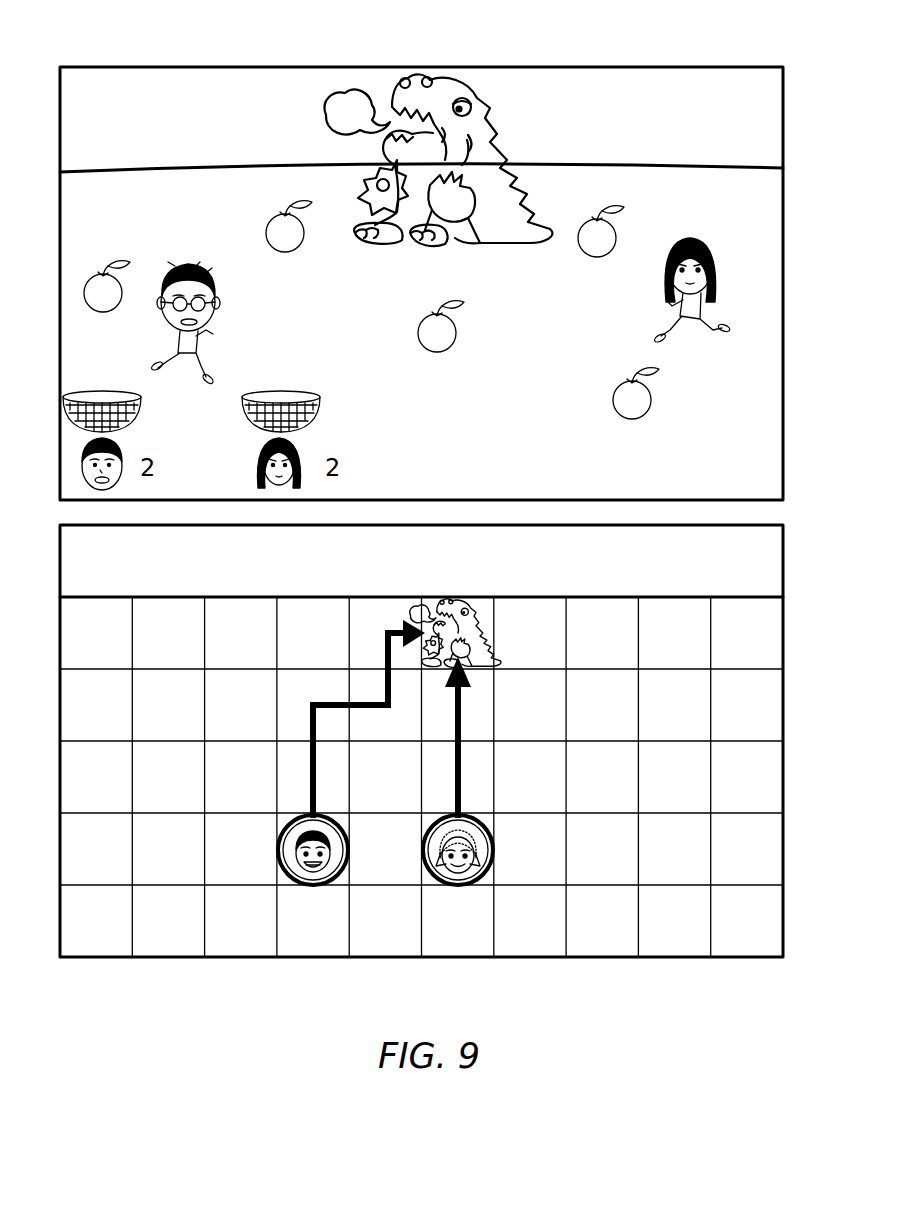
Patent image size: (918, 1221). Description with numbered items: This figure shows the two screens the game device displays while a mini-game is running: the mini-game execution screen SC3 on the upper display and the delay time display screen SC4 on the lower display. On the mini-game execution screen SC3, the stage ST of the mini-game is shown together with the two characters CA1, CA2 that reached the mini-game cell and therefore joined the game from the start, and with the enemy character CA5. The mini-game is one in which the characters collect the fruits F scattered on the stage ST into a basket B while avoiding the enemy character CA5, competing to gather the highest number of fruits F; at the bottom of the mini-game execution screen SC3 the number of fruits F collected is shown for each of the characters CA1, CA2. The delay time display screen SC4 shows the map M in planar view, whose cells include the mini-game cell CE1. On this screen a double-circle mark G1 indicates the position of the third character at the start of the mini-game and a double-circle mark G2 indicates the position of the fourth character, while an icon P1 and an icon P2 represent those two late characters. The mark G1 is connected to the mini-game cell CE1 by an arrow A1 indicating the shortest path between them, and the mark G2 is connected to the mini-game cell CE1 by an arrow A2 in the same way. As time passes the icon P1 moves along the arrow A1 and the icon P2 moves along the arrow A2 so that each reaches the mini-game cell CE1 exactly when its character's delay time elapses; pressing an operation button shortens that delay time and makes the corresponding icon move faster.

The mini-game execution screen SC3 is at (628, 67).
The stage ST is at (720, 177).
The character CA1 is at (191, 262).
The character CA2 is at (684, 243).
The enemy character CA5 is at (459, 243).
The fruits F is at (446, 352).
The basket B is at (287, 392).
The delay time display screen SC4 is at (625, 958).
The map M is at (738, 935).
The mini-game cell CE1 is at (488, 633).
The arrow A1 is at (310, 708).
The arrow A2 is at (462, 710).
The icon P1 is at (291, 854).
The icon P2 is at (494, 841).
The double-circle mark G1 is at (318, 886).
The double-circle mark G2 is at (465, 886).